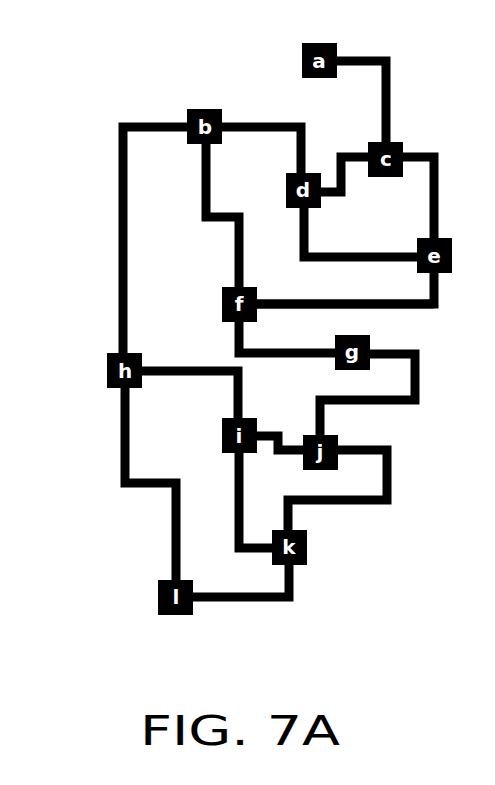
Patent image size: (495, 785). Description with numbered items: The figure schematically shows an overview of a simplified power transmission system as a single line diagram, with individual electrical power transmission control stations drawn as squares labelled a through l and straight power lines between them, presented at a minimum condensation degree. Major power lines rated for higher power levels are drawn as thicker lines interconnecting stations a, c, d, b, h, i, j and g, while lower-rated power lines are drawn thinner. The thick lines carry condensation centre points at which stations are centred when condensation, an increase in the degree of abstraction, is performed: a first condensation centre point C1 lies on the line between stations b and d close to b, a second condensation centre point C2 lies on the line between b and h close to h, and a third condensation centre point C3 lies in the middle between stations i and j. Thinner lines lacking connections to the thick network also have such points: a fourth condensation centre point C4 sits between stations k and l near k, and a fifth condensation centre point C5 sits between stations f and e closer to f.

The first condensation centre point C1 is at (238, 122).
The second condensation centre point C2 is at (120, 337).
The third condensation centre point C3 is at (277, 450).
The fourth condensation centre point C4 is at (285, 600).
The fifth condensation centre point C5 is at (282, 300).